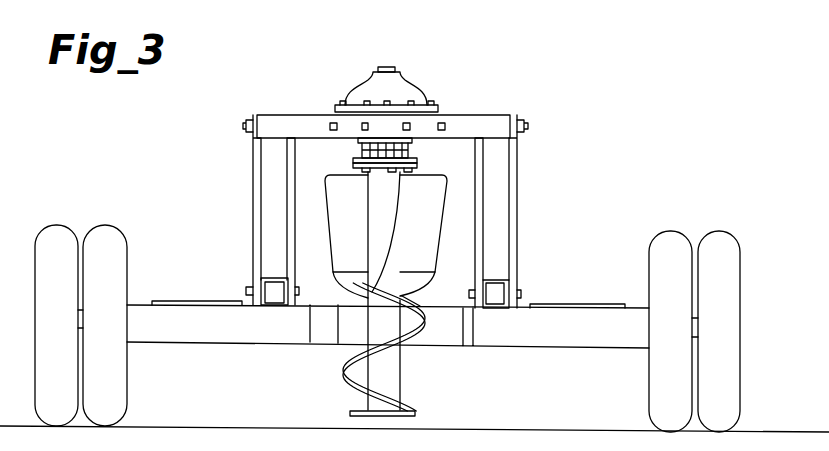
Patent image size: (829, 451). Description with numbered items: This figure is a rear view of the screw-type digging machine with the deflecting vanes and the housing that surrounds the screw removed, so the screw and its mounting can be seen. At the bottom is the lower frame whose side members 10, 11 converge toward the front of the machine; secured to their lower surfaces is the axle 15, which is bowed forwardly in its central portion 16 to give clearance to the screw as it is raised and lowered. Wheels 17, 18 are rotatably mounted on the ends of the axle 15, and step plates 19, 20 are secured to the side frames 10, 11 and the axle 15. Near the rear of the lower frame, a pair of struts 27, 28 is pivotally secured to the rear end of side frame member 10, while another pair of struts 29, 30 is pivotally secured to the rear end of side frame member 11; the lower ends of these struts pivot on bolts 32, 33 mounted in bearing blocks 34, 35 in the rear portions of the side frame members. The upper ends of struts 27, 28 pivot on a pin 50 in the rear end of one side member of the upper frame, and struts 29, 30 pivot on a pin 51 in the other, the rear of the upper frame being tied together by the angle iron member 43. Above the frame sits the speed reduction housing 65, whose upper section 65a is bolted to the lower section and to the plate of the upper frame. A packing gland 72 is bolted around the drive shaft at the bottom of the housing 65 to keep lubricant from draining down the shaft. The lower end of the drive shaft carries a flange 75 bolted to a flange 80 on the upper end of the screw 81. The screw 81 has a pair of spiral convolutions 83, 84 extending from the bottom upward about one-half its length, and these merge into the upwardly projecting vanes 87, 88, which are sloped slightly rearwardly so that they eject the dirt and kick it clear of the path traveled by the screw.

The side member of the lower frame 10 is at (278, 282).
The side member of the lower frame 11 is at (494, 283).
The axle 15 is at (538, 349).
The forwardly bowed central portion of the axle 16 is at (427, 312).
The wheel 17 is at (387, 328).
The wheel 18 is at (388, 328).
The step plate 19 is at (584, 298).
The step plate 20 is at (208, 298).
The strut 27 is at (253, 212).
The strut 28 is at (295, 248).
The strut 29 is at (475, 250).
The strut 30 is at (517, 246).
The bolt 32 is at (246, 291).
The bolt 33 is at (521, 294).
The bearing block 34 is at (280, 310).
The bearing block 35 is at (496, 310).
The angle iron member 43 is at (383, 128).
The pin 50 is at (243, 126).
The pin 51 is at (528, 126).
The speed reduction housing 65 is at (410, 86).
The upper section of the speed reduction housing 65a is at (368, 82).
The packing gland 72 is at (362, 152).
The flange 75 is at (420, 160).
The flange 80 is at (420, 168).
The screw 81 is at (384, 291).
The spiral convolution 83 is at (416, 413).
The spiral convolution 84 is at (420, 388).
The vane 87 is at (423, 223).
The vane 88 is at (346, 223).